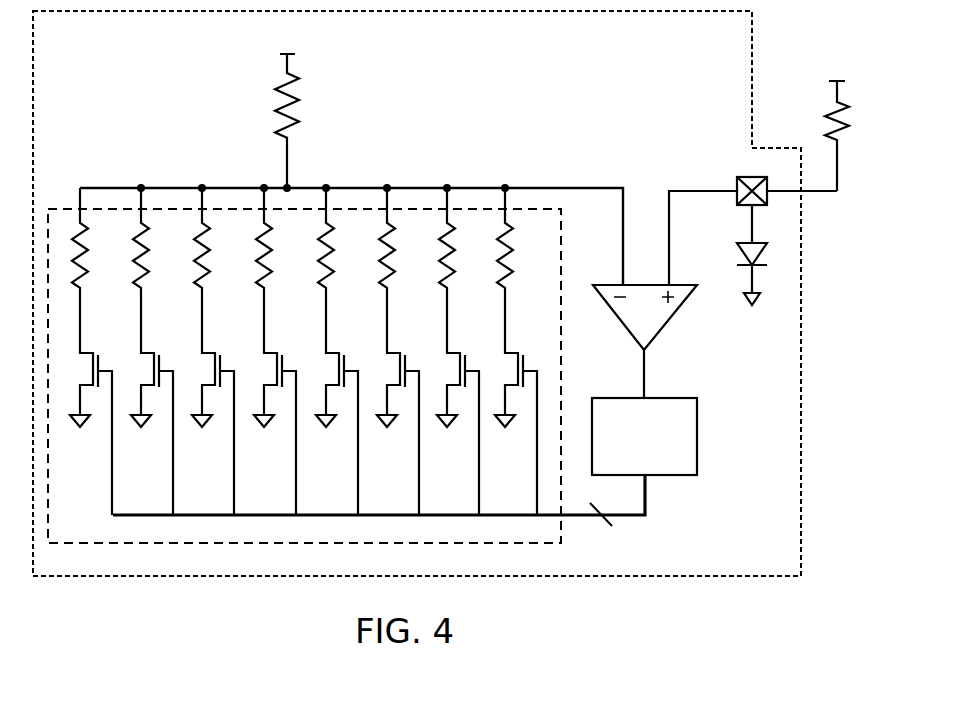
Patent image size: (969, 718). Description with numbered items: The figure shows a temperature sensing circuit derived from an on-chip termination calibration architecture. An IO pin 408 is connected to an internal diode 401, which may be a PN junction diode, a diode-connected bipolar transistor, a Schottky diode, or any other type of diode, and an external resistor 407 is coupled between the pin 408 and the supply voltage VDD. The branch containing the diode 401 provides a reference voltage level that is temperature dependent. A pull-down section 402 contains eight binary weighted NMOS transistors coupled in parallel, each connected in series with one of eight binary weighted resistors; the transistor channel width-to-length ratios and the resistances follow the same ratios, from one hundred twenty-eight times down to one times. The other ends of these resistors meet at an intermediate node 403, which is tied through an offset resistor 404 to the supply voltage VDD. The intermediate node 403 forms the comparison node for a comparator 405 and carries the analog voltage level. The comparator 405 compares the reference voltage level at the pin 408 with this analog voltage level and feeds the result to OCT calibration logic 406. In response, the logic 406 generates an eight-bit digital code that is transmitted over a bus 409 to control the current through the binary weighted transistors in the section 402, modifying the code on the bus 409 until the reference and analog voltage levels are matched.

The internal diode 401 is at (750, 243).
The pull-down section 402 is at (561, 218).
The intermediate node 403 is at (285, 187).
The offset resistor 404 is at (295, 88).
The comparator 405 is at (677, 309).
The OCT calibration logic 406 is at (697, 423).
The external resistor 407 is at (822, 108).
The IO pin 408 is at (752, 177).
The bus 409 is at (648, 490).